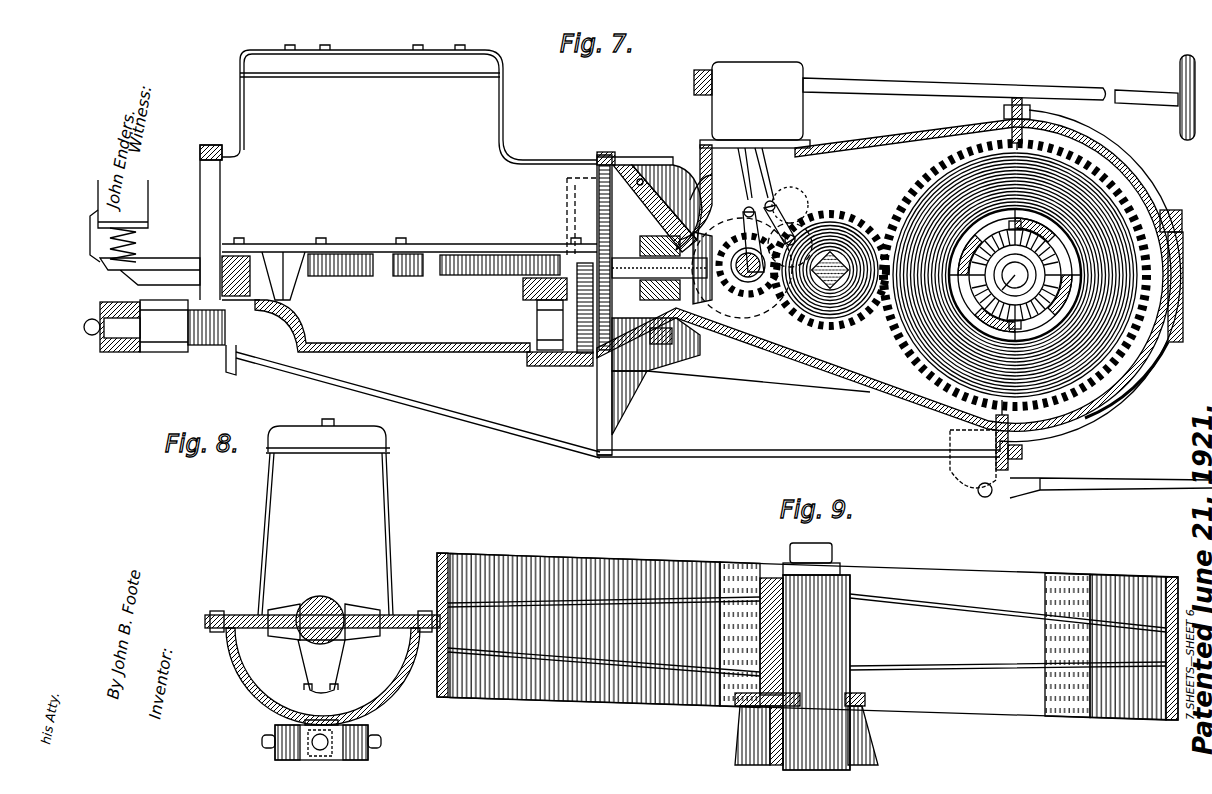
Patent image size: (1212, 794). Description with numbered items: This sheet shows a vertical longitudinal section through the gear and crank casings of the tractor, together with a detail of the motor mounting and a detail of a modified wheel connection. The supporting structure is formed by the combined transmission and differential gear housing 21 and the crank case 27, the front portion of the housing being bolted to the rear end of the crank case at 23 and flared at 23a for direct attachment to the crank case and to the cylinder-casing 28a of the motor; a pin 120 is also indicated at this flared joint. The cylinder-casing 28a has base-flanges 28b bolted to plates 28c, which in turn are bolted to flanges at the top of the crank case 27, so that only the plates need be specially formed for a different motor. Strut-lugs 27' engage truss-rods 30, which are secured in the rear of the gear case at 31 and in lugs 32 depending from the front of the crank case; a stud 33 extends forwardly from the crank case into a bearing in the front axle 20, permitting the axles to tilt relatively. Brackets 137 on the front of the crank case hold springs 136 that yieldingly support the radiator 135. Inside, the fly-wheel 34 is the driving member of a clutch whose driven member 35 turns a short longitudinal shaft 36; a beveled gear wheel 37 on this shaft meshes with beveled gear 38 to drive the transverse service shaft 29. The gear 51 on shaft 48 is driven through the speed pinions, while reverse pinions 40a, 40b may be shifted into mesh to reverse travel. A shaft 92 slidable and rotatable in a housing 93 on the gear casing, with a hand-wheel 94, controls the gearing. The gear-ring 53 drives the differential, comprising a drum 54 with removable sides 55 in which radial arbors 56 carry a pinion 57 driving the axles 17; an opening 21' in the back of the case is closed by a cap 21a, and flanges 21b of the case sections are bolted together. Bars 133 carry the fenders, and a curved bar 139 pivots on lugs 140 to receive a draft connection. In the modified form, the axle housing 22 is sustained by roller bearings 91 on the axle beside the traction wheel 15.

In FIG. 9, the rear traction wheel 15 is at (662, 560).
In FIG. 7, the axle 17 is at (1008, 275).
In FIG. 7, the front axle 20 is at (106, 352).
In FIG. 7, the transmission and differential gear housing 21 is at (889, 281).
In FIG. 7, the removable cap 21a is at (1172, 345).
In FIG. 7, the flange 21b is at (1025, 98).
In FIG. 7, the opening 21' is at (1166, 248).
In FIG. 9, the axle housing 22 is at (736, 748).
In FIG. 7, the bolted joint 23 is at (606, 158).
In FIG. 7, the flared front end 23a is at (660, 205).
In FIG. 7, the crank case 27 is at (392, 326).
In FIG. 8, the crank case 27 is at (323, 676).
In FIG. 7, the strut-lug 27' is at (589, 473).
In FIG. 7, the cylinder-casing 28a is at (409, 119).
In FIG. 8, the cylinder-casing 28a is at (325, 517).
In FIG. 7, the base-flange 28b is at (355, 244).
In FIG. 8, the base-flange 28b is at (225, 612).
In FIG. 7, the plate 28c is at (450, 252).
In FIG. 8, the plate 28c is at (212, 625).
In FIG. 7, the service shaft 29 is at (745, 262).
In FIG. 7, the truss-rod 30 is at (705, 457).
In FIG. 7, the truss-rod securement 31 is at (1024, 452).
In FIG. 7, the lug 32 is at (230, 374).
In FIG. 7, the stud 33 is at (100, 320).
In FIG. 7, the fly-wheel 34 is at (542, 368).
In FIG. 7, the driven clutch member 35 is at (580, 368).
In FIG. 7, the longitudinal shaft 36 is at (662, 268).
In FIG. 7, the beveled gear wheel 37 is at (716, 300).
In FIG. 7, the beveled gear 38 is at (780, 318).
In FIG. 7, the reverse pinion 40a is at (800, 205).
In FIG. 7, the reverse pinion 40b is at (816, 214).
In FIG. 7, the shaft 48 is at (826, 296).
In FIG. 7, the gear 51 is at (874, 238).
In FIG. 7, the gear-ring 53 is at (917, 188).
In FIG. 7, the drum 54 is at (1022, 275).
In FIG. 7, the drum side 55 is at (962, 248).
In FIG. 7, the radial arbor 56 is at (1070, 273).
In FIG. 7, the pinion 57 is at (1052, 242).
In FIG. 9, the roller bearing 91 is at (866, 752).
In FIG. 7, the shaft 92 is at (930, 86).
In FIG. 7, the housing 93 is at (752, 131).
In FIG. 7, the hand-wheel 94 is at (1176, 64).
In FIG. 7, the pivot pin 120 is at (641, 178).
In FIG. 7, the bar 133 is at (666, 340).
In FIG. 7, the radiator 135 is at (145, 209).
In FIG. 7, the spring 136 is at (138, 241).
In FIG. 7, the bracket 137 is at (158, 270).
In FIG. 7, the curved bar 139 is at (1142, 478).
In FIG. 7, the lug 140 is at (990, 470).